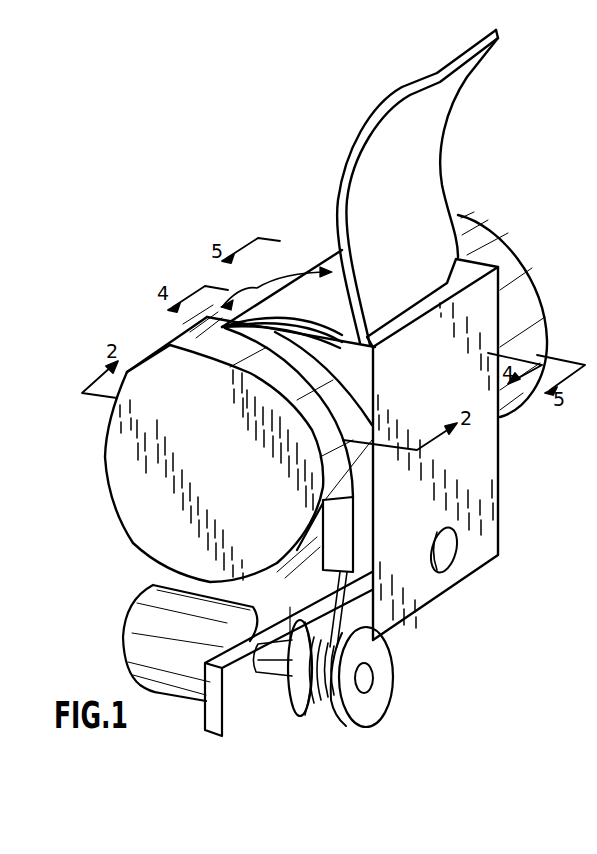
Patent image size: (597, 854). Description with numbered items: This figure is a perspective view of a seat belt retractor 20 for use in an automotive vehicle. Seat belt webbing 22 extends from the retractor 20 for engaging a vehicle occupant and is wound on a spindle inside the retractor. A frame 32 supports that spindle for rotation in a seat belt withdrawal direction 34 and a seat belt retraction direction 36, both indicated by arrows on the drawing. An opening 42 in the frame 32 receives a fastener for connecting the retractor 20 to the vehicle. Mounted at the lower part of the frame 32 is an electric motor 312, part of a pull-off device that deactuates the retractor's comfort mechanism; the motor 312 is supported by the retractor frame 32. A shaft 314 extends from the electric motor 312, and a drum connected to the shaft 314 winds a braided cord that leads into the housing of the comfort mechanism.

The seat belt retractor 20 is at (178, 236).
The seat belt webbing 22 is at (387, 145).
The frame 32 is at (427, 583).
The seat belt withdrawal direction 34 is at (290, 292).
The seat belt retraction direction 36 is at (257, 288).
The opening 42 is at (452, 555).
The electric motor 312 is at (160, 632).
The shaft 314 is at (273, 665).